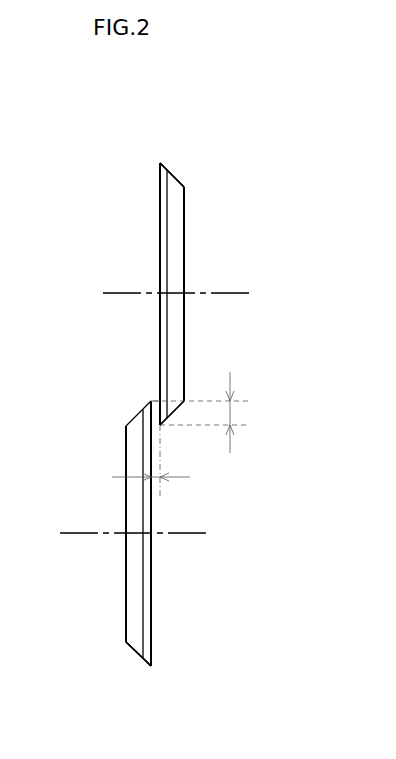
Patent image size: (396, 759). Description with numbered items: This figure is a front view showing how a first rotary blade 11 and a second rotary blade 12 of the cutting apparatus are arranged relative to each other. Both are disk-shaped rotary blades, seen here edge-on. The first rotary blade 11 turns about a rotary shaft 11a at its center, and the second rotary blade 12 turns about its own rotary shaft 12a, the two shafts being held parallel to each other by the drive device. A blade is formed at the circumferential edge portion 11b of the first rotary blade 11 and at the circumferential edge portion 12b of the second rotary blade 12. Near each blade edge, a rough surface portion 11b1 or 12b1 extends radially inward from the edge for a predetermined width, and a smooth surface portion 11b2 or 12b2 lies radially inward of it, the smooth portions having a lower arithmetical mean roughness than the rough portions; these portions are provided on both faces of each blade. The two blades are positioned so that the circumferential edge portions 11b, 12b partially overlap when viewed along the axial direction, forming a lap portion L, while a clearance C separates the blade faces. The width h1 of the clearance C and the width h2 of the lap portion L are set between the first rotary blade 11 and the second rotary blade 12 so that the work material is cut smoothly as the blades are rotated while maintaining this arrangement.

The first rotary blade 11 is at (197, 228).
The rotary shaft 11a is at (236, 293).
The circumferential edge portion 11b is at (157, 160).
The rough surface portion 11b1 is at (163, 165).
The smooth surface portion 11b2 is at (178, 172).
The second rotary blade 12 is at (113, 598).
The rotary shaft 12a is at (72, 534).
The circumferential edge portion 12b is at (152, 668).
The rough surface portion 12b1 is at (146, 665).
The smooth surface portion 12b2 is at (131, 646).
The clearance C is at (155, 399).
The lap portion L is at (183, 411).
The width of the clearance h1 is at (164, 461).
The width of the lap portion h2 is at (232, 413).